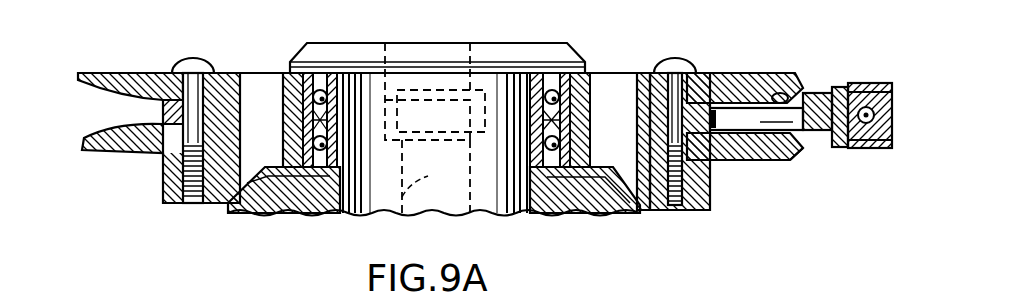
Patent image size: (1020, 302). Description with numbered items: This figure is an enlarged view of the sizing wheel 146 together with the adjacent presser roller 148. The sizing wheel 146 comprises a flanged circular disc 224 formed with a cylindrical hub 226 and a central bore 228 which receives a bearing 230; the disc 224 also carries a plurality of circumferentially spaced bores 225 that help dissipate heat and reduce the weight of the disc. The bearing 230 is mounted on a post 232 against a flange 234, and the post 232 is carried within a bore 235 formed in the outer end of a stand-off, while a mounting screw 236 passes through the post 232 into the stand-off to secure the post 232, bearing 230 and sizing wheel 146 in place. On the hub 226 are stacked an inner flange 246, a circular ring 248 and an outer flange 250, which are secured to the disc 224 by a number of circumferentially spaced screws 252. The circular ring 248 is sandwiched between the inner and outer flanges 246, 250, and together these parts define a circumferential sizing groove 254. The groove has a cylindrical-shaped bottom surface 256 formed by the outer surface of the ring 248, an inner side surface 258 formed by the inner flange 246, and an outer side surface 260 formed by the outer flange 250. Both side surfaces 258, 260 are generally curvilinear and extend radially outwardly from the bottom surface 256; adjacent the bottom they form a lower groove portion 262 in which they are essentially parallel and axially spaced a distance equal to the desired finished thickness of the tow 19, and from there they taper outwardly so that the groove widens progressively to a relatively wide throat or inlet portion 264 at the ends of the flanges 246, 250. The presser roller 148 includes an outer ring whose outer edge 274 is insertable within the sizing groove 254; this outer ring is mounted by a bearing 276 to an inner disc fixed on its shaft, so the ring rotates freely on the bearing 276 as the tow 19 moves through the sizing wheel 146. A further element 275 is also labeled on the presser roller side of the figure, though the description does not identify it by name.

The tow 19 is at (735, 75).
The sizing wheel 146 is at (470, 158).
The presser roller 148 is at (771, 139).
The flanged circular disc 224 is at (637, 200).
The circumferentially spaced bores 225 is at (613, 87).
The cylindrical hub 226 is at (645, 192).
The central bore 228 is at (284, 172).
The bearing 230 is at (345, 210).
The post 232 is at (449, 204).
The flange 234 is at (492, 64).
The bore 235 is at (340, 157).
The mounting screw 236 is at (435, 128).
The inner flange 246 is at (150, 153).
The circular ring 248 is at (253, 72).
The outer flange 250 is at (133, 80).
The screws 252 is at (192, 205).
The sizing groove 254 is at (98, 120).
The bottom surface 256 is at (212, 77).
The inner side surface 258 is at (760, 162).
The outer side surface 260 is at (778, 93).
The lower groove portion 262 is at (724, 162).
The throat or inlet portion 264 is at (810, 150).
The outer edge 274 is at (700, 77).
The rod 275 is at (797, 133).
The bearing 276 is at (867, 88).